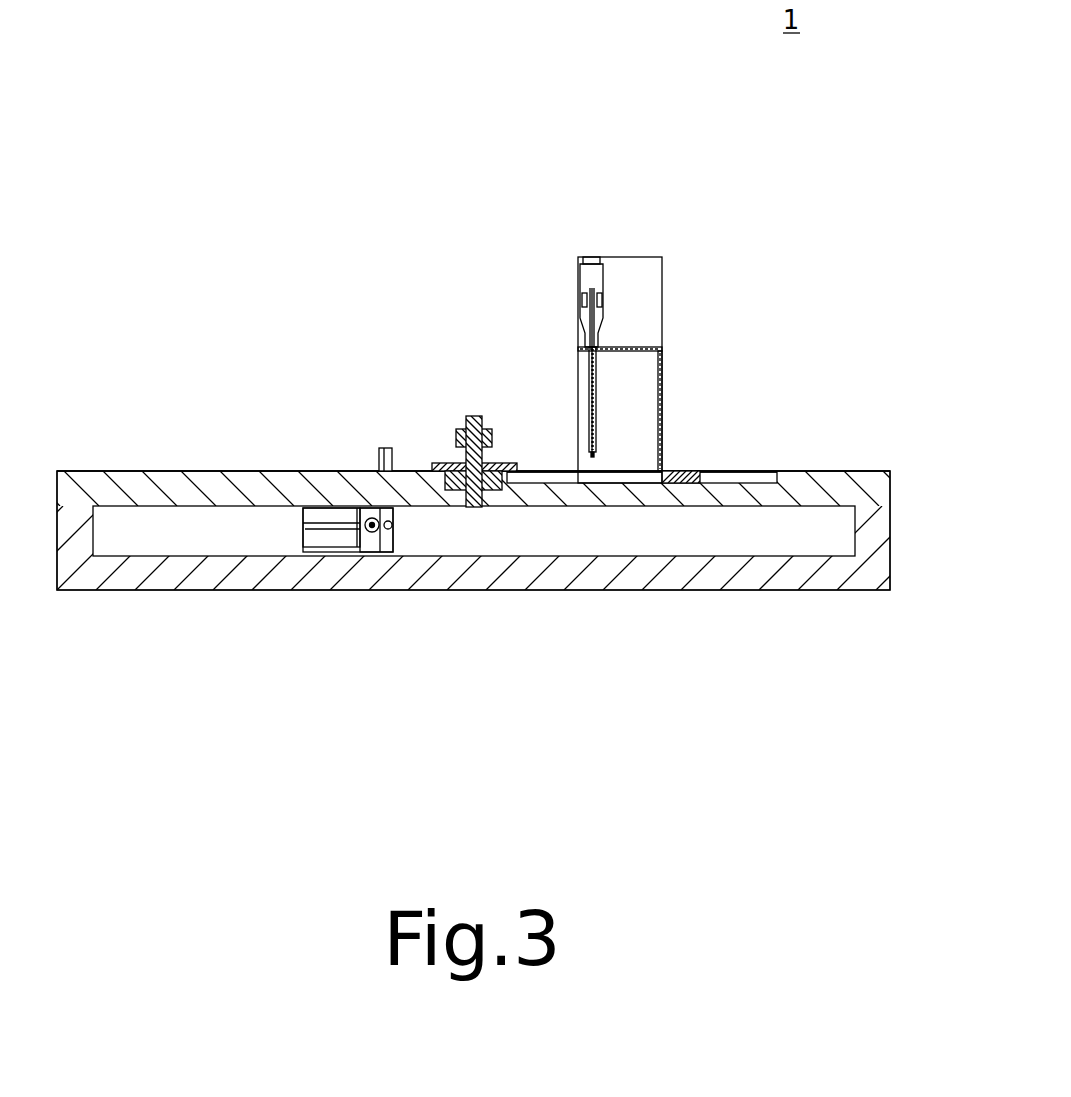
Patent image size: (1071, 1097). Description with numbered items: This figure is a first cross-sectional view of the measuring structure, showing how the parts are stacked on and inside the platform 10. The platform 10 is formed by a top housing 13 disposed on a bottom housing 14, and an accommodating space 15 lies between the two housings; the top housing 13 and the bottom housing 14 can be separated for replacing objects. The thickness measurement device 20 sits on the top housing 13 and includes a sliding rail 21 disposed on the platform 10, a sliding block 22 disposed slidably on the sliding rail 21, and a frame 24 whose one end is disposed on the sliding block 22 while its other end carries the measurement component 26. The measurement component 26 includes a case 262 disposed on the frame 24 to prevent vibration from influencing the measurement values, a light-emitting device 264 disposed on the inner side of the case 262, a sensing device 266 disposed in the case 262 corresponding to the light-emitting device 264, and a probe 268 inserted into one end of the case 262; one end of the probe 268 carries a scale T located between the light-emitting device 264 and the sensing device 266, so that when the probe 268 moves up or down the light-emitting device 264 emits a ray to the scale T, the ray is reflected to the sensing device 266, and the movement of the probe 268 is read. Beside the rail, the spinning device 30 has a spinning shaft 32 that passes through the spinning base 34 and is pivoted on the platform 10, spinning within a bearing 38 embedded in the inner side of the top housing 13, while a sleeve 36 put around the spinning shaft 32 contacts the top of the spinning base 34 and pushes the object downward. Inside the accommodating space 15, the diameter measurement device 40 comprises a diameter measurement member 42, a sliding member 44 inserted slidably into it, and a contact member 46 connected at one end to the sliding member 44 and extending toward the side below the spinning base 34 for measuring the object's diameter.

The platform 10 is at (112, 350).
The top housing 13 is at (125, 471).
The bottom housing 14 is at (832, 590).
The accommodating space 15 is at (672, 551).
The thickness measurement device 20 is at (705, 293).
The sliding rail 21 is at (750, 480).
The sliding block 22 is at (700, 478).
The frame 24 is at (662, 400).
The measurement component 26 is at (592, 230).
The case 262 is at (583, 273).
The light-emitting device 264 is at (583, 300).
The sensing device 266 is at (602, 302).
The probe 268 is at (585, 337).
The scale T is at (594, 293).
The spinning device 30 is at (398, 330).
The spinning shaft 32 is at (472, 416).
The spinning base 34 is at (513, 465).
The sleeve 36 is at (456, 435).
The bearing 38 is at (440, 482).
The diameter measurement device 40 is at (278, 523).
The diameter measurement member 42 is at (303, 535).
The sliding member 44 is at (393, 525).
The contact member 46 is at (386, 552).